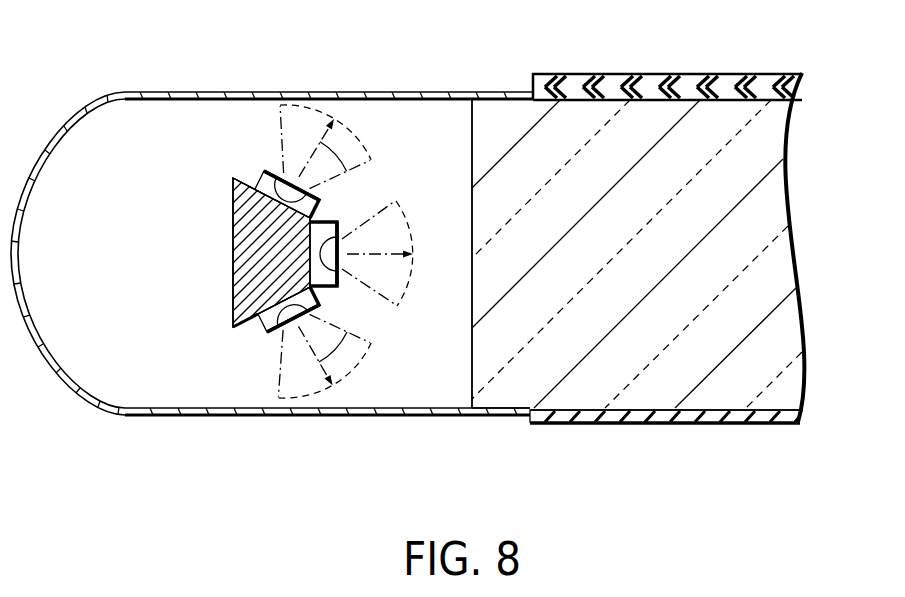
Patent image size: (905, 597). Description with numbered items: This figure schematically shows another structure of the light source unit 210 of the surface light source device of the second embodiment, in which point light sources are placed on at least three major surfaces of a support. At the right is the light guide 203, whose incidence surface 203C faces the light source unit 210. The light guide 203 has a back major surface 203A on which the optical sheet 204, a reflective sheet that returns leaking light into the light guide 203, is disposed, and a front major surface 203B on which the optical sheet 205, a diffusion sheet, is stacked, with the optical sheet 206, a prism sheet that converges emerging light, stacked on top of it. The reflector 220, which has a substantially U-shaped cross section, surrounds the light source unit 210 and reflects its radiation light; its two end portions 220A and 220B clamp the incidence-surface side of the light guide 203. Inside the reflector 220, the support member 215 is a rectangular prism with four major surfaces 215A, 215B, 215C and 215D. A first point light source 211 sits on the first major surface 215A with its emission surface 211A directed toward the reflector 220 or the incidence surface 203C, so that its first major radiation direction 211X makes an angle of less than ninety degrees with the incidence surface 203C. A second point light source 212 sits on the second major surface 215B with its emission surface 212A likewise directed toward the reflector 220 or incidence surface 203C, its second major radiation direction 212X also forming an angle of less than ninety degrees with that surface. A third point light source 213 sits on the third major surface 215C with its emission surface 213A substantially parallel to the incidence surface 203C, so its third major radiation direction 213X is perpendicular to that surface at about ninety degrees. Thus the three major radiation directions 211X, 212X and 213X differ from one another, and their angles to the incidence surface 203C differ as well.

The light guide 203 is at (758, 203).
The major surface (back surface) of light guide 203A is at (645, 411).
The major surface (front surface) of light guide 203B is at (688, 98).
The incidence surface 203C is at (470, 365).
The optical sheet 204 is at (738, 425).
The optical sheet 205 is at (802, 101).
The optical sheet 206 is at (802, 76).
The light source unit 210 is at (236, 373).
The first point light source 211 is at (265, 170).
The emission surface of first point light source 211A is at (316, 190).
The first major radiation direction 211X is at (363, 146).
The second point light source 212 is at (259, 331).
The emission surface of second point light source 212A is at (364, 342).
The second major radiation direction 212X is at (356, 381).
The third point light source 213 is at (333, 294).
The emission surface of third point light source 213A is at (360, 226).
The third major radiation direction 213X is at (406, 270).
The support member 215 is at (253, 283).
The first major surface 215A is at (247, 181).
The second major surface 215B is at (233, 328).
The third major surface 215C is at (318, 243).
The fourth major surface 215D is at (235, 207).
The reflector 220 is at (181, 92).
The end portion of reflector 220A is at (503, 417).
The end portion of reflector 220B is at (489, 92).